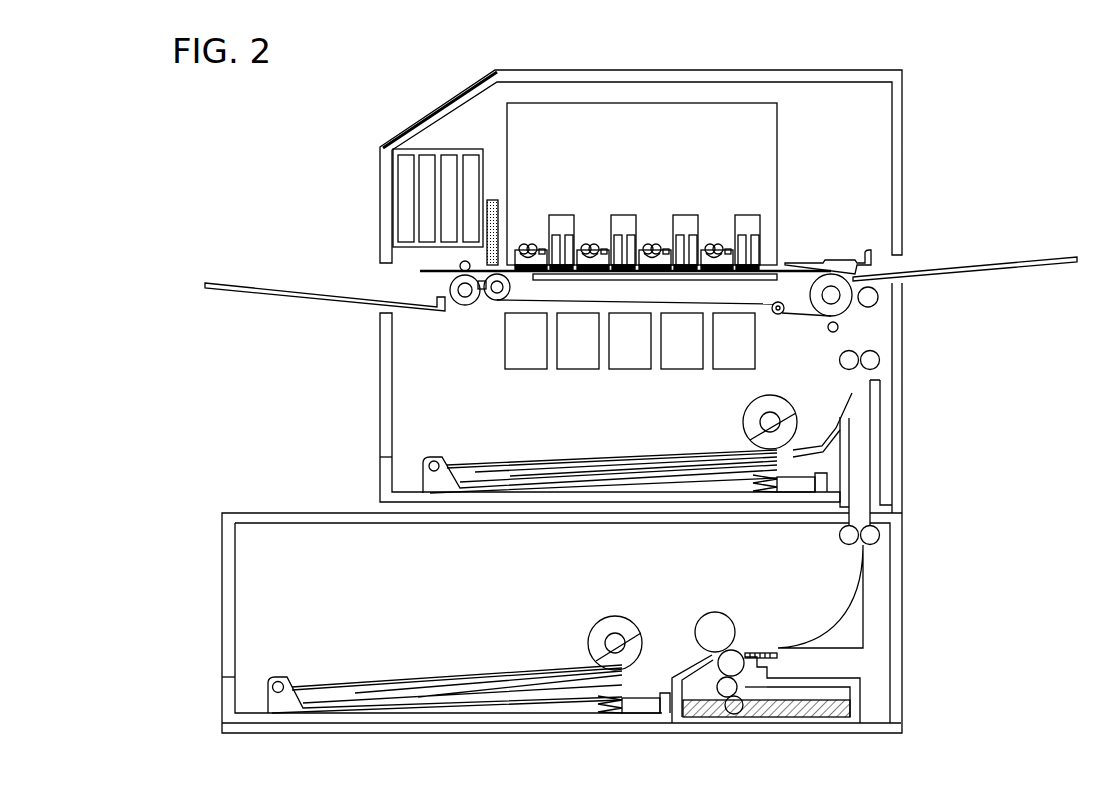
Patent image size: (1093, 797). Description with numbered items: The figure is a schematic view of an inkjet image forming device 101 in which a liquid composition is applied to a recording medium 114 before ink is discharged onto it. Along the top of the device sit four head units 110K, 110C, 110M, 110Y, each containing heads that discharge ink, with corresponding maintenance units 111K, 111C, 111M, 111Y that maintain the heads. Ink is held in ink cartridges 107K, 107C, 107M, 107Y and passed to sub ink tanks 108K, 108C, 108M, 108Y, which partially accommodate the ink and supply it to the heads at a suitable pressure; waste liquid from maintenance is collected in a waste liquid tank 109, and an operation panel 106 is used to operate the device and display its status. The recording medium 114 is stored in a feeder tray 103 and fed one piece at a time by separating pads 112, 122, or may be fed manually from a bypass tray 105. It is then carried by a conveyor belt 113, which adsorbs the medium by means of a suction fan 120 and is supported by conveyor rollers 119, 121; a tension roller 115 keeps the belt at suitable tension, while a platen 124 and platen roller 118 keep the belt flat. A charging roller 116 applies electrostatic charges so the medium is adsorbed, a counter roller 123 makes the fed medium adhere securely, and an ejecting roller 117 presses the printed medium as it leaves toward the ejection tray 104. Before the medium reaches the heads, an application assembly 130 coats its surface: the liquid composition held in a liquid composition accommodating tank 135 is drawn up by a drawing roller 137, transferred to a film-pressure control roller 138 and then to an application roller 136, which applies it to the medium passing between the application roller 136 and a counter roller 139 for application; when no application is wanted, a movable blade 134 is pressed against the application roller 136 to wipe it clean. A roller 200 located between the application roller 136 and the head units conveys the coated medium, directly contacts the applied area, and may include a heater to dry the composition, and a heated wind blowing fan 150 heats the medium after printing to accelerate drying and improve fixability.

The image forming device 101 is at (869, 70).
The feeder tray 103 is at (380, 476).
The ejection tray 104 is at (233, 283).
The bypass tray 105 is at (987, 261).
The operation panel 106 is at (446, 100).
The ink cartridge 107Y is at (470, 158).
The ink cartridge 107M is at (447, 158).
The ink cartridge 107C is at (427, 167).
The ink cartridge 107K is at (405, 211).
The sub ink tank 108Y is at (570, 372).
The sub ink tank 108M is at (622, 372).
The sub ink tank 108C is at (674, 372).
The sub ink tank 108K is at (726, 372).
The waste liquid tank 109 is at (518, 372).
The head unit 110Y is at (560, 215).
The head unit 110M is at (622, 215).
The head unit 110C is at (684, 215).
The head unit 110K is at (746, 215).
The maintenance unit 111Y is at (528, 243).
The maintenance unit 111M is at (590, 243).
The maintenance unit 111C is at (651, 243).
The maintenance unit 111K is at (713, 243).
The separating pad 112 is at (792, 397).
The conveyor belt 113 is at (519, 310).
The recording medium 114 is at (426, 277).
The tension roller 115 is at (783, 313).
The charging roller 116 is at (454, 304).
The ejecting roller 117 is at (460, 264).
The platen roller 118 is at (839, 329).
The conveyor roller 119 is at (813, 276).
The suction fan 120 is at (483, 302).
The conveyor roller 121 is at (511, 291).
The separating pad 122 is at (843, 260).
The counter roller 123 is at (879, 300).
The platen 124 is at (758, 281).
The application assembly 130 is at (858, 712).
The movable blade 134 is at (753, 652).
The liquid composition accommodating tank 135 is at (840, 697).
The application roller 136 is at (744, 650).
The drawing roller 137 is at (758, 683).
The film-pressure control roller 138 is at (708, 682).
The counter roller for application 139 is at (708, 611).
The heated wind blowing fan 150 is at (492, 198).
The roller 200 is at (881, 360).